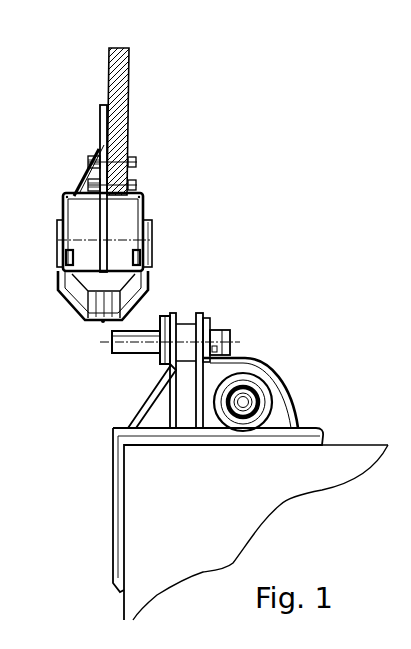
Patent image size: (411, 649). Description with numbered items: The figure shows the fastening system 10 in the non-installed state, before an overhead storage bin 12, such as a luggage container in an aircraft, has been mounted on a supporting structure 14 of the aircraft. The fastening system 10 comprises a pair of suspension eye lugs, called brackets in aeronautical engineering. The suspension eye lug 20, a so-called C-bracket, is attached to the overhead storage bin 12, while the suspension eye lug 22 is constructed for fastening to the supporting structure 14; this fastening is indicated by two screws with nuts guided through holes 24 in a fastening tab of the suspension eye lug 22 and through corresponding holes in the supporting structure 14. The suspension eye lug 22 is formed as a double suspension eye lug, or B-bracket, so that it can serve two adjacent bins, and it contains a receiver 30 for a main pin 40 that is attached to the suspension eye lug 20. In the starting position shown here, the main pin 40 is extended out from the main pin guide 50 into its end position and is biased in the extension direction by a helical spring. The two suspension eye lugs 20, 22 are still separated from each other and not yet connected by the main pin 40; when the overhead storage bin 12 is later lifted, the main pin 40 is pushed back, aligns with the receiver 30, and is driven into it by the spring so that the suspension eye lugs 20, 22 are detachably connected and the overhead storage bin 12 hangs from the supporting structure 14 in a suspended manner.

The fastening system 10 is at (240, 215).
The overhead storage bin 12 is at (257, 497).
The supporting structure 14 is at (122, 83).
The suspension eye lug 20 is at (210, 308).
The suspension eye lug 22 is at (147, 185).
The holes 24 is at (95, 160).
The receiver 30 is at (157, 231).
The main pin 40 is at (118, 353).
The main pin guide 50 is at (232, 320).